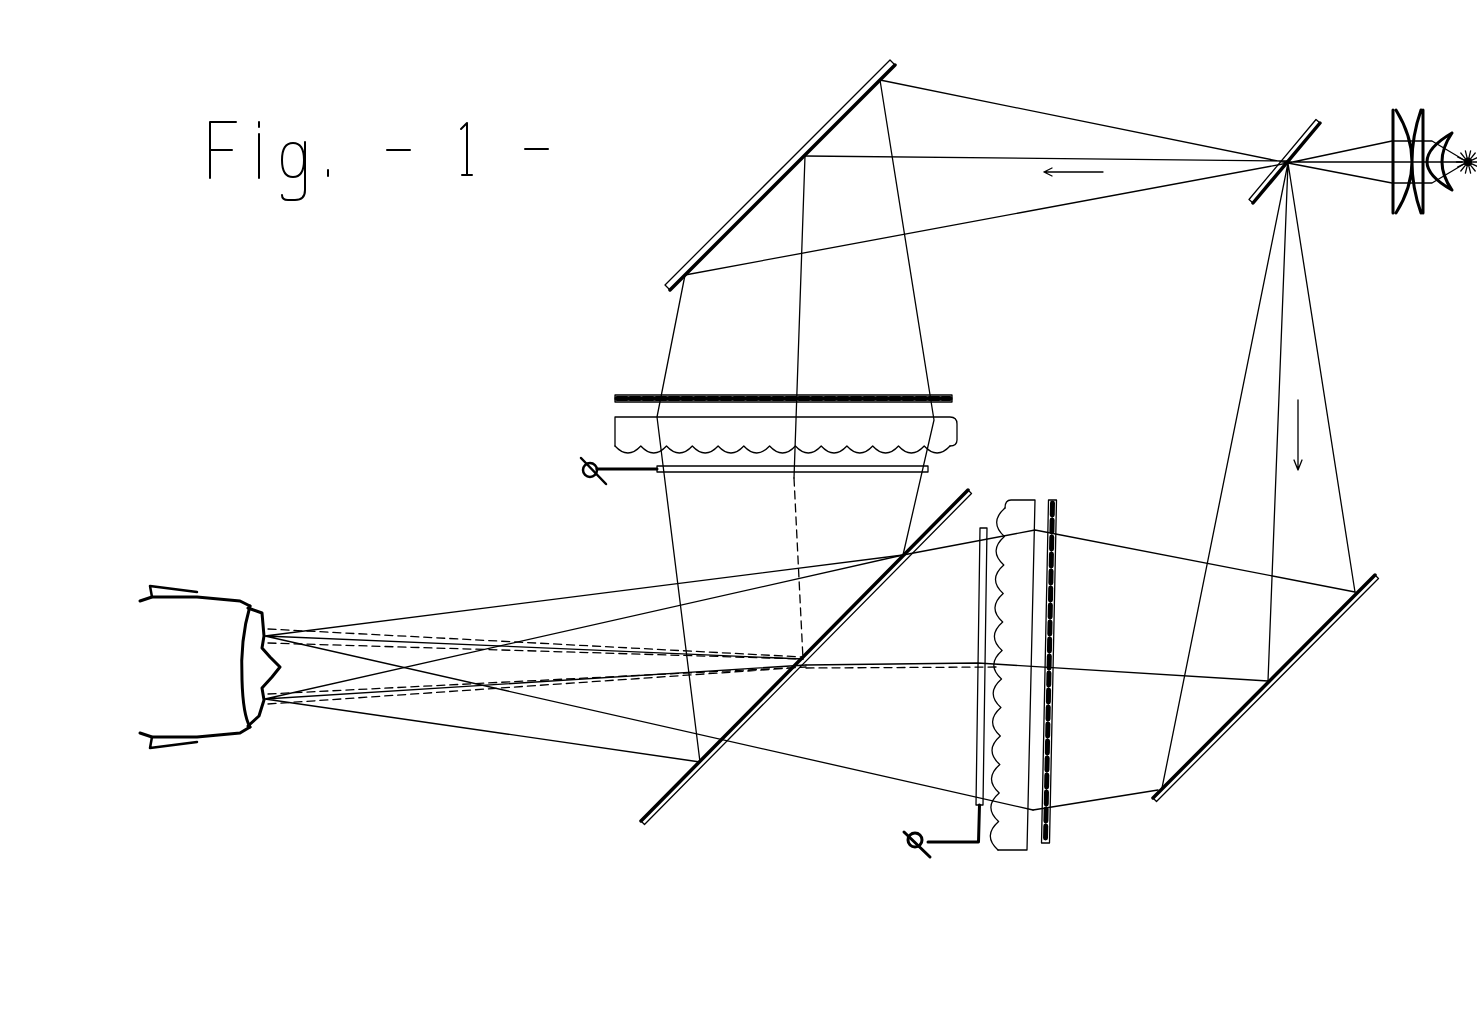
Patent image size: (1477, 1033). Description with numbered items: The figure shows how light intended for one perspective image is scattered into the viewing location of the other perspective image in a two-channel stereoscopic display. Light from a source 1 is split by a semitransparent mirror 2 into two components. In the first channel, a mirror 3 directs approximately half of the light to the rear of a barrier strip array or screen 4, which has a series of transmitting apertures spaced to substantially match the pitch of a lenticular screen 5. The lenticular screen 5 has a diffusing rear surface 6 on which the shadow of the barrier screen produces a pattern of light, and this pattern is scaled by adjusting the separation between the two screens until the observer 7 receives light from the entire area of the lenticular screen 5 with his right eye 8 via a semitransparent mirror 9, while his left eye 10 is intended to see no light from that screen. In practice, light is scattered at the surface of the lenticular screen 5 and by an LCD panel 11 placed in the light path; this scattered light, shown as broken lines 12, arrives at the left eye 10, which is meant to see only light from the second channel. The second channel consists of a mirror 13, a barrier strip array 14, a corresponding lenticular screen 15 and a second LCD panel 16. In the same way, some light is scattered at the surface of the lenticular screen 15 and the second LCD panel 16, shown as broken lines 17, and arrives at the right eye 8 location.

The source 1 is at (1467, 140).
The semitransparent mirror 2 is at (1247, 181).
The mirror 3 is at (793, 148).
The barrier strip array 4 is at (973, 362).
The lenticular screen 5 is at (1022, 420).
The diffusing rear surface 6 is at (785, 438).
The observer 7 is at (218, 595).
The right eye 8 is at (292, 740).
The semitransparent mirror 9 is at (665, 788).
The left eye 10 is at (268, 627).
The LCD panel 11 is at (698, 472).
The broken lines 12 is at (803, 532).
The mirror 13 is at (1283, 710).
The barrier strip array 14 is at (1092, 843).
The lenticular screen 15 is at (1028, 880).
The second LCD panel 16 is at (973, 728).
The broken lines 17 is at (852, 692).